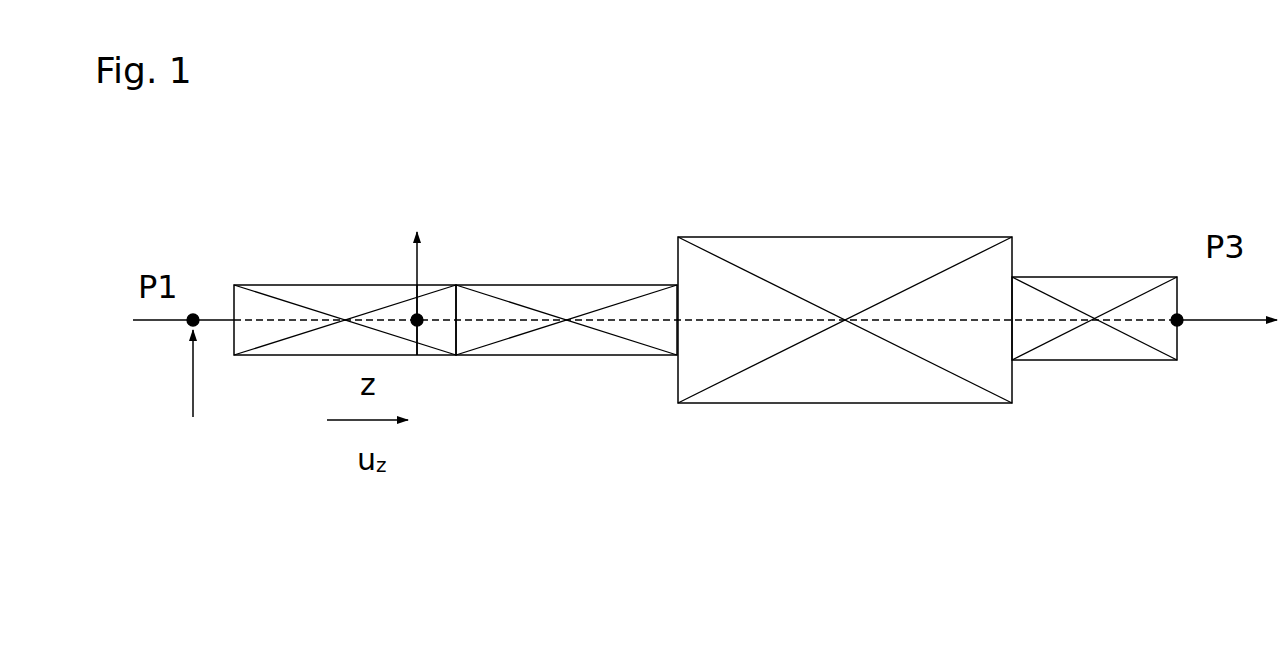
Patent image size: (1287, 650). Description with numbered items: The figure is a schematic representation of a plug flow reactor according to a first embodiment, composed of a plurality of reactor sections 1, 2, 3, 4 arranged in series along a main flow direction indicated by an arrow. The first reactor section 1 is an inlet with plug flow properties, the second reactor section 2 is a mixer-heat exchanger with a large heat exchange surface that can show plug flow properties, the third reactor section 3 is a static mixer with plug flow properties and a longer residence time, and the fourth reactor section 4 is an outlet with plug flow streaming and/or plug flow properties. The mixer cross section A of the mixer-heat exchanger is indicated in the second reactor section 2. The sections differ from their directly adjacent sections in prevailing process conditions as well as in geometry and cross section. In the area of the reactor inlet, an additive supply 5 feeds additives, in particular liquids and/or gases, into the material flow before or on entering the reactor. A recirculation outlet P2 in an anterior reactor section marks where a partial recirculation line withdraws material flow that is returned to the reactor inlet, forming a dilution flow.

The first reactor section 1 is at (392, 335).
The second reactor section 2 is at (605, 332).
The third reactor section 3 is at (800, 342).
The fourth reactor section 4 is at (1077, 327).
The additive supply 5 is at (192, 373).
The mixer cross section A is at (428, 346).
The recirculation outlet P2 is at (447, 293).